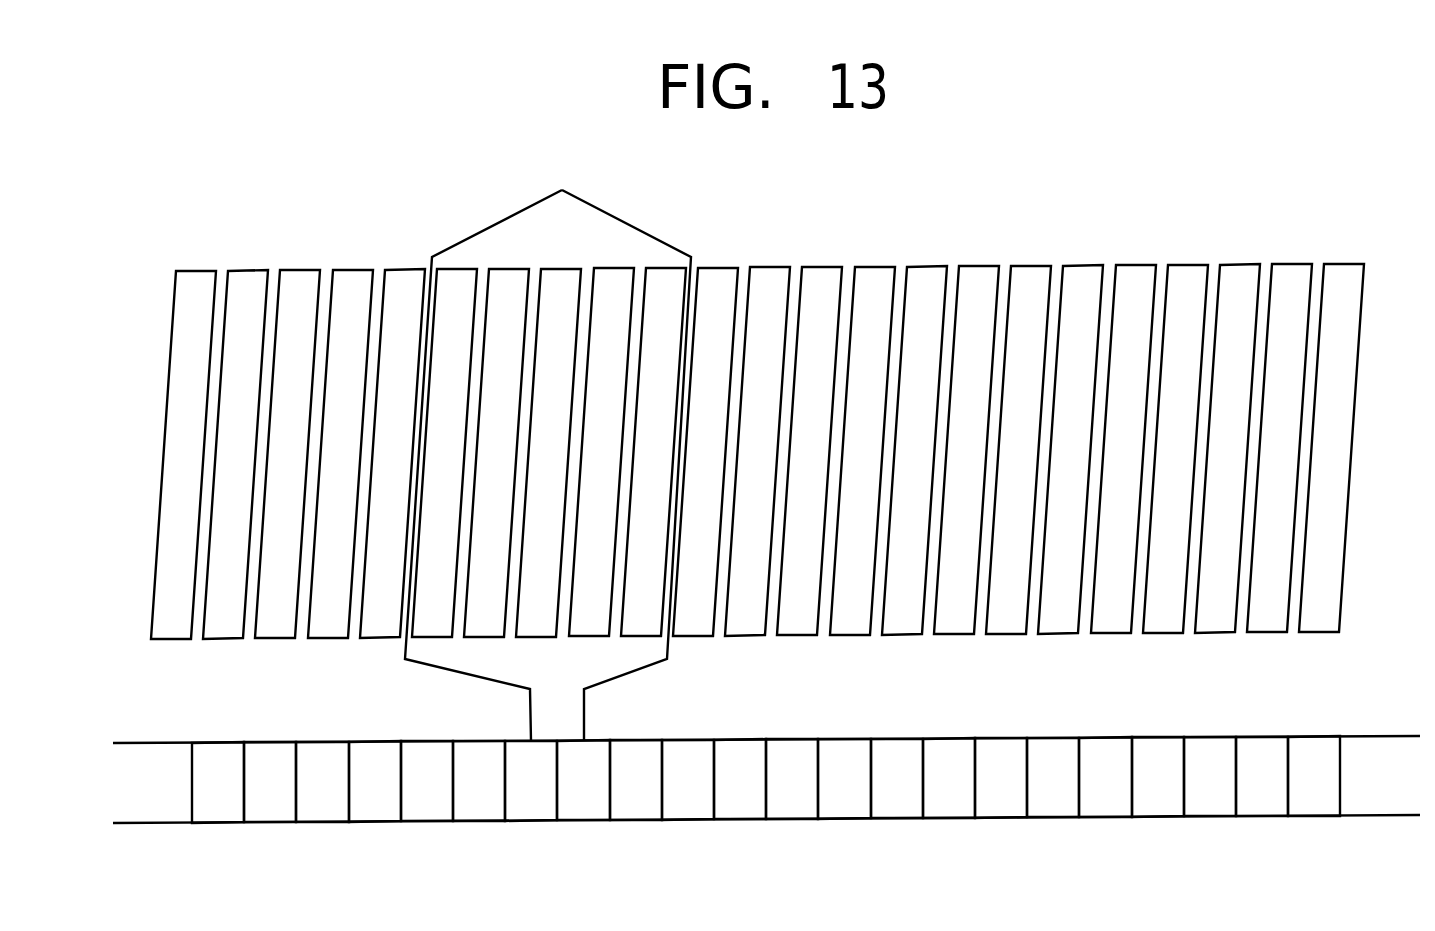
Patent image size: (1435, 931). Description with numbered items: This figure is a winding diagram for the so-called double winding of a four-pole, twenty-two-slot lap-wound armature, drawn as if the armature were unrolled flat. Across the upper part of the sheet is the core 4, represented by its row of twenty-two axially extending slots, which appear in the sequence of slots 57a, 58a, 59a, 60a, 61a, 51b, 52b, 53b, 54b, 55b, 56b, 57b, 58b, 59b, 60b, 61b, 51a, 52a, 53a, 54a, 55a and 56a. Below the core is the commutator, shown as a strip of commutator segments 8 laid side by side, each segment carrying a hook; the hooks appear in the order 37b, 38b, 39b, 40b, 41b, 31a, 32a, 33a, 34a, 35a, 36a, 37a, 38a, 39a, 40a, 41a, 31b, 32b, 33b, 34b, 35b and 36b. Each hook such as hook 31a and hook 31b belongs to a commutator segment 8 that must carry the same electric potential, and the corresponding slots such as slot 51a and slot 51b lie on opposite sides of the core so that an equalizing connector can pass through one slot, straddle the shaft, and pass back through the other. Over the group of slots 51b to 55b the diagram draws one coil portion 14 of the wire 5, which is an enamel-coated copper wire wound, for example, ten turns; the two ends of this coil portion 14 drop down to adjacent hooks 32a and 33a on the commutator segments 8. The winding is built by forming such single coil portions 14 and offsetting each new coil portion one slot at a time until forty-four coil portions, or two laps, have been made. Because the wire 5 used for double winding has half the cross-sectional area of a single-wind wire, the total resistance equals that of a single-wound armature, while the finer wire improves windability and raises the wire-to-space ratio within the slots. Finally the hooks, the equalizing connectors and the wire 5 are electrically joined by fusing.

The core 4 is at (1361, 352).
The wire 5 is at (507, 217).
The commutator segments 8 is at (1370, 800).
The coil portion 14 is at (613, 217).
The slot 57a is at (195, 429).
The slot 58a is at (247, 429).
The slot 59a is at (299, 428).
The slot 60a is at (352, 428).
The slot 61a is at (404, 428).
The slot 51b is at (456, 437).
The slot 52b is at (508, 428).
The slot 53b is at (560, 428).
The slot 54b is at (613, 437).
The slot 55b is at (665, 427).
The slot 56b is at (717, 427).
The slot 57b is at (769, 427).
The slot 58b is at (821, 427).
The slot 59b is at (874, 427).
The slot 60b is at (926, 427).
The slot 61b is at (978, 426).
The slot 51a is at (1030, 426).
The slot 52a is at (1082, 426).
The slot 53a is at (1135, 426).
The slot 54a is at (1187, 426).
The slot 55a is at (1239, 426).
The slot 56a is at (1291, 425).
The hook 37b is at (218, 782).
The hook 38b is at (270, 782).
The hook 39b is at (322, 782).
The hook 40b is at (375, 781).
The hook 41b is at (427, 781).
The hook 31a is at (479, 781).
The hook 32a is at (531, 781).
The hook 33a is at (583, 780).
The hook 34a is at (636, 780).
The hook 35a is at (688, 780).
The hook 36a is at (740, 779).
The hook 37a is at (792, 779).
The hook 38a is at (844, 779).
The hook 39a is at (897, 778).
The hook 40a is at (949, 778).
The hook 41a is at (1001, 778).
The hook 31b is at (1053, 777).
The hook 32b is at (1105, 777).
The hook 33b is at (1158, 777).
The hook 34b is at (1210, 776).
The hook 35b is at (1262, 776).
The hook 36b is at (1314, 776).